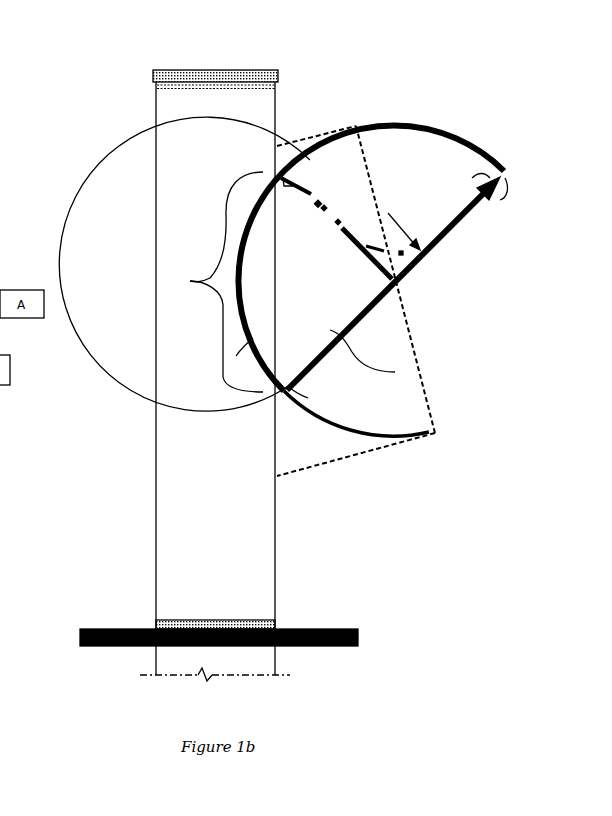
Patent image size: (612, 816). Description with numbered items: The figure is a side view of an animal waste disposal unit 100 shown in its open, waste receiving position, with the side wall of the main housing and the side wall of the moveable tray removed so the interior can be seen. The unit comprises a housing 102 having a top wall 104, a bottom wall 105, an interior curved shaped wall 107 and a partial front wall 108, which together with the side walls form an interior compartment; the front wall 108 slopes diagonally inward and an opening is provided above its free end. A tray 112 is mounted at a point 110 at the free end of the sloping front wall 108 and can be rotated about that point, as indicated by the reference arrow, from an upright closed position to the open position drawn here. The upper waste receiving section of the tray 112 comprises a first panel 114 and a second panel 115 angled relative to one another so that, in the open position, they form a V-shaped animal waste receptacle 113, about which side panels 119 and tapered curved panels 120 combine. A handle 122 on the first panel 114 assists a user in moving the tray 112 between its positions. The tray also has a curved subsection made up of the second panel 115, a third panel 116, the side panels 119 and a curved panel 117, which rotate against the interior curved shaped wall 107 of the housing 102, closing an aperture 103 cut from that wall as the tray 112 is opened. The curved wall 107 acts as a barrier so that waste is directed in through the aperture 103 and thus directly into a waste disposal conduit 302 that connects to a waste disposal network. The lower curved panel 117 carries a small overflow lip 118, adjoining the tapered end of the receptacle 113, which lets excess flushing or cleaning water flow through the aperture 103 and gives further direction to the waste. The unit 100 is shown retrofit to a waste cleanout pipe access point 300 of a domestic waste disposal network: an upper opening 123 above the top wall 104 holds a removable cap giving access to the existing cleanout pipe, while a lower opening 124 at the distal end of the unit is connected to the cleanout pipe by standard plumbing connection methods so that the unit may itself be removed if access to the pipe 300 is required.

The animal waste disposal unit 100 is at (97, 122).
The housing 102 is at (330, 488).
The aperture 103 is at (190, 281).
The top wall 104 is at (278, 147).
The bottom wall 105 is at (363, 457).
The interior curved shaped wall 107 is at (308, 398).
The partial front wall 108 is at (430, 392).
The mounting point 110 is at (400, 283).
The tray 112 is at (437, 110).
The animal waste receptacle 113 is at (416, 177).
The first panel 114 is at (500, 198).
The second panel 115 is at (322, 247).
The third panel 116 is at (395, 372).
The curved panel 117 is at (253, 338).
The overflow lip 118 is at (323, 198).
The side panels 119 is at (468, 240).
The tapered curved panels 120 is at (472, 178).
The handle 122 is at (503, 200).
The upper opening 123 is at (211, 128).
The lower opening 124 is at (210, 606).
The waste cleanout pipe access point 300 is at (278, 626).
The waste disposal conduit 302 is at (240, 662).